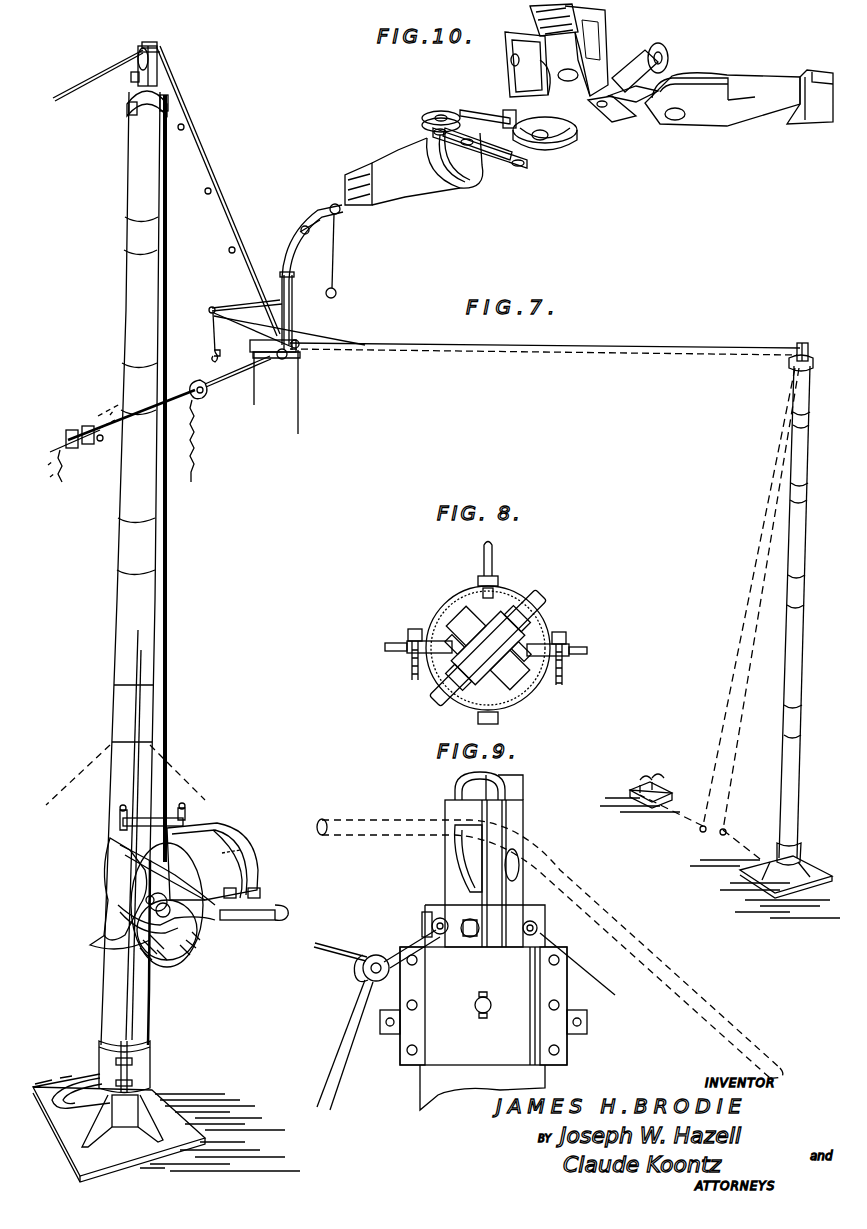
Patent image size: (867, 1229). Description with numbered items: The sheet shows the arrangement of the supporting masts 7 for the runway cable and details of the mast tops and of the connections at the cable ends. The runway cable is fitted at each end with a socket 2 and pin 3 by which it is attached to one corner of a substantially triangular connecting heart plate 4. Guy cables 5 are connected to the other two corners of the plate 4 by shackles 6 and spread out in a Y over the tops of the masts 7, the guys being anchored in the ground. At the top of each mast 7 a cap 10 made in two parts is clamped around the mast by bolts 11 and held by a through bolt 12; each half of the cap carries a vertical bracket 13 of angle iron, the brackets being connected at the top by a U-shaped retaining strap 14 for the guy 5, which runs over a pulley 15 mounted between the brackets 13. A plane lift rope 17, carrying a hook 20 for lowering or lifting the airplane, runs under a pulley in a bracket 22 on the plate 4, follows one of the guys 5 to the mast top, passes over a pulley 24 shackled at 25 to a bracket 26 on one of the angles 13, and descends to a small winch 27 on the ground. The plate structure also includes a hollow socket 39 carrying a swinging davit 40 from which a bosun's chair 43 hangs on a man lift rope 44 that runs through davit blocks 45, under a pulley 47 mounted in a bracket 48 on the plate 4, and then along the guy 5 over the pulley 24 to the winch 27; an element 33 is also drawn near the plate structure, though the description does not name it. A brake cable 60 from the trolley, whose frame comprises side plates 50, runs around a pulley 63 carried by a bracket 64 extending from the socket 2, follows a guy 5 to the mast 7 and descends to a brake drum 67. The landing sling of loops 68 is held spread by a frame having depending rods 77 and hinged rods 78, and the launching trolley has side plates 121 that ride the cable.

In FIG. 10, the socket 2 is at (405, 165).
In FIG. 10, the pin 3 is at (544, 142).
In FIG. 7, the connecting heart plate 4 is at (284, 358).
In FIG. 10, the connecting heart plate 4 is at (597, 120).
In FIG. 7, the guy cables 5 is at (70, 90).
In FIG. 9, the guy cables 5 is at (342, 826).
In FIG. 10, the shackle 6 is at (530, 16).
In FIG. 7, the mast 7 is at (130, 210).
In FIG. 9, the mast 7 is at (432, 1078).
In FIG. 7, the cap 10 is at (128, 110).
In FIG. 8, the cap 10 is at (500, 598).
In FIG. 9, the cap 10 is at (523, 1028).
In FIG. 8, the bolt 11 is at (566, 648).
In FIG. 9, the bolt 11 is at (560, 1054).
In FIG. 8, the through bolt 12 is at (478, 717).
In FIG. 9, the through bolt 12 is at (480, 1010).
In FIG. 7, the vertical bracket 13 is at (153, 80).
In FIG. 8, the vertical bracket 13 is at (473, 592).
In FIG. 9, the vertical bracket 13 is at (453, 900).
In FIG. 7, the U-shaped retaining strap 14 is at (157, 48).
In FIG. 8, the U-shaped retaining strap 14 is at (533, 600).
In FIG. 9, the U-shaped retaining strap 14 is at (510, 790).
In FIG. 7, the pulley 15 is at (140, 62).
In FIG. 8, the pulley 15 is at (447, 672).
In FIG. 9, the pulley 15 is at (462, 864).
In FIG. 7, the plane lift rope 17 is at (210, 326).
In FIG. 7, the hook 20 is at (211, 354).
In FIG. 10, the bracket 22 is at (618, 122).
In FIG. 9, the pulley 24 is at (370, 978).
In FIG. 9, the shackle 25 is at (412, 937).
In FIG. 8, the bracket 26 is at (548, 605).
In FIG. 9, the bracket 26 is at (432, 912).
In FIG. 7, the winch 27 is at (653, 783).
In FIG. 7, the brace rod 33 is at (260, 300).
In FIG. 7, the socket 39 is at (290, 300).
In FIG. 10, the socket 39 is at (600, 34).
In FIG. 7, the davit 40 is at (286, 245).
In FIG. 7, the bosun's chair 43 is at (337, 292).
In FIG. 7, the man lift rope 44 is at (334, 262).
In FIG. 7, the davit blocks 45 is at (337, 215).
In FIG. 10, the pulley 47 is at (660, 44).
In FIG. 10, the bracket 48 is at (636, 62).
In FIG. 7, the side plates 50 is at (196, 396).
In FIG. 7, the brake cable 60 is at (168, 673).
In FIG. 10, the pulley 63 is at (437, 110).
In FIG. 10, the bracket 64 is at (468, 122).
In FIG. 7, the brake drum 67 is at (238, 858).
In FIG. 7, the loops 68 is at (192, 478).
In FIG. 7, the depending rods 77 is at (262, 343).
In FIG. 7, the hinged rods 78 is at (254, 398).
In FIG. 7, the side plates 121 is at (76, 428).